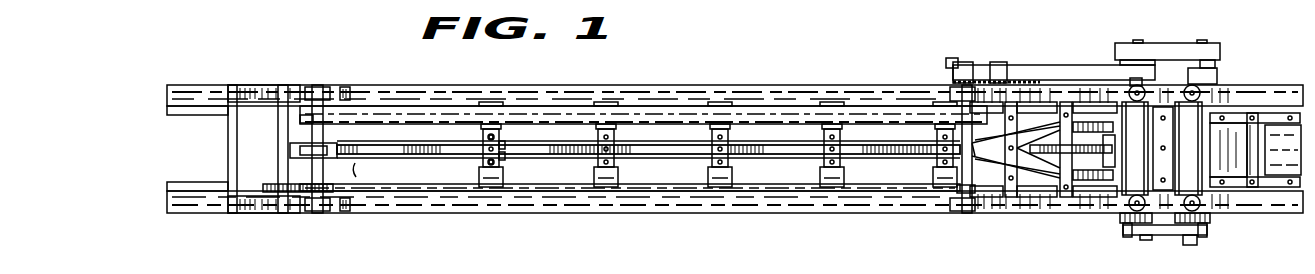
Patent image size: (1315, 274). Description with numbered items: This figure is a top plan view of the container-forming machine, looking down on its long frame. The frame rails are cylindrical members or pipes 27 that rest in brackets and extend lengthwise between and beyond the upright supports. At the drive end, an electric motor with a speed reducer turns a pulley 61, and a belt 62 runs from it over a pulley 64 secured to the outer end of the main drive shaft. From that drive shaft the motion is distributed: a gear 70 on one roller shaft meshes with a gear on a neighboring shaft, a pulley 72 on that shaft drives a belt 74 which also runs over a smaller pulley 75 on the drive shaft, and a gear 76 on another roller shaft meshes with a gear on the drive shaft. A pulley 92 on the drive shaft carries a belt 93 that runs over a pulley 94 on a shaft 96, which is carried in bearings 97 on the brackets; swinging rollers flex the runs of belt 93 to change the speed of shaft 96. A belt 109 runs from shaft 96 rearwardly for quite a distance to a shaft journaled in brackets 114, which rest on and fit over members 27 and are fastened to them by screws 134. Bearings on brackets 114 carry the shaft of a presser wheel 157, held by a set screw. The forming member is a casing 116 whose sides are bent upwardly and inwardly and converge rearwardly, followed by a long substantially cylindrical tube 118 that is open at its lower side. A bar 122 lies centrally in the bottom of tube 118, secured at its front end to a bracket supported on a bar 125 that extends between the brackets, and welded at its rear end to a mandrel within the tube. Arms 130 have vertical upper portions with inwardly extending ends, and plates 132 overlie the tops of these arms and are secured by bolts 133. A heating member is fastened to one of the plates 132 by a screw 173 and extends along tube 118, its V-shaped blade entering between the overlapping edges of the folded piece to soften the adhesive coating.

The cylindrical members or pipes 27 is at (212, 112).
The pulley 61 is at (1217, 45).
The belt 62 is at (1184, 44).
The pulley 64 is at (1123, 43).
The gear 70 is at (1212, 218).
The pulley 72 is at (1198, 234).
The belt 74 is at (1162, 236).
The pulley 75 is at (1148, 240).
The gear 76 is at (1122, 218).
The pulley 92 is at (1158, 67).
The belt 93 is at (1055, 66).
The pulley 94 is at (952, 58).
The shaft 96 is at (960, 192).
The bearings 97 is at (957, 93).
The belt 109 is at (680, 120).
The brackets 114 is at (276, 88).
The casing 116 is at (981, 170).
The tube 118 is at (648, 158).
The bar 122 is at (1096, 150).
The bar 125 is at (1012, 194).
The arms 130 is at (497, 188).
The plates 132 is at (504, 163).
The bolts 133 is at (482, 135).
The screws 134 is at (332, 87).
The presser wheel 157 is at (290, 152).
The screw 173 is at (503, 143).